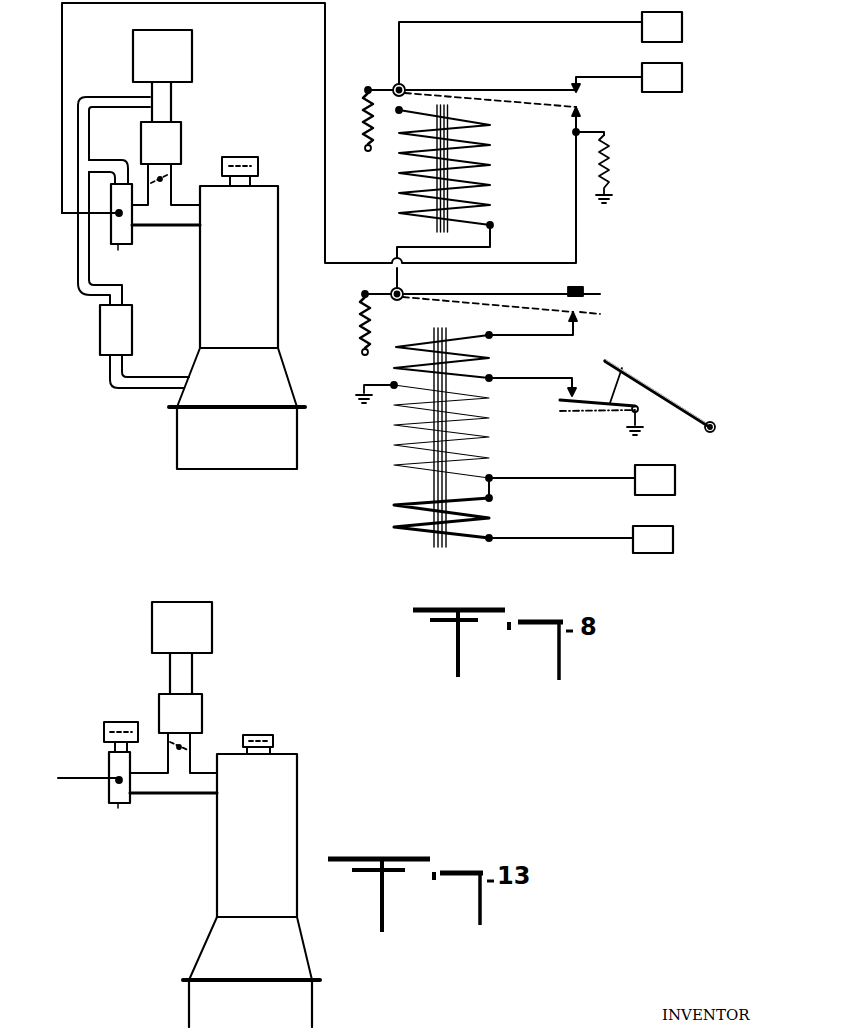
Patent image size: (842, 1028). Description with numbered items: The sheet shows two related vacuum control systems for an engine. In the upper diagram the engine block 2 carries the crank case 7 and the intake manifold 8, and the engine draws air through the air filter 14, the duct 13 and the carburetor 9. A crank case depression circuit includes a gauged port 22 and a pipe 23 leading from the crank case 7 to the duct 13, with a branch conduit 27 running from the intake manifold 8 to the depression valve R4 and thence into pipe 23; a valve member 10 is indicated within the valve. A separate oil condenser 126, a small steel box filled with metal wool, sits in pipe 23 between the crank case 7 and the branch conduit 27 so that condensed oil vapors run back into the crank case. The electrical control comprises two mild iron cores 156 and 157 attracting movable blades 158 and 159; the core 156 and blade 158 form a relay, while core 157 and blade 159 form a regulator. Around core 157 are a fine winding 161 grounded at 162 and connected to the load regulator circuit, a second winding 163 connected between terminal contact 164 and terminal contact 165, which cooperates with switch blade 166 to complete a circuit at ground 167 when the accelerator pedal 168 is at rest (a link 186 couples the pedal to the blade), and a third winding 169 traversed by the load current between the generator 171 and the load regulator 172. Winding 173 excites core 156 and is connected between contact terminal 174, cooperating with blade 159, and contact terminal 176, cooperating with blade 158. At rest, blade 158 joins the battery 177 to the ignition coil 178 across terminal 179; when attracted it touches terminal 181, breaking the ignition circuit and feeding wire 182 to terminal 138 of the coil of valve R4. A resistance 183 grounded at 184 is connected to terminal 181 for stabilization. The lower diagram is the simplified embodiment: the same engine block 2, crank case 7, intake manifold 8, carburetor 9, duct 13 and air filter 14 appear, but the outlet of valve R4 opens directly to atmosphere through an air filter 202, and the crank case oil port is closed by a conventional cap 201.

In FIG. 8, the engine block 2 is at (278, 243).
In FIG. 13, the engine block 2 is at (257, 835).
In FIG. 8, the crank case 7 is at (281, 378).
In FIG. 13, the crank case 7 is at (251, 972).
In FIG. 8, the intake manifold 8 is at (188, 206).
In FIG. 13, the intake manifold 8 is at (210, 784).
In FIG. 8, the carburetor 9 is at (161, 143).
In FIG. 13, the carburetor 9 is at (202, 718).
In FIG. 8, the valve member 10 is at (170, 181).
In FIG. 13, the valve member 10 is at (190, 751).
In FIG. 8, the duct 13 is at (171, 100).
In FIG. 13, the duct 13 is at (191, 677).
In FIG. 8, the air filter 14 is at (162, 56).
In FIG. 13, the air filter 14 is at (208, 631).
In FIG. 8, the gauged port 22 is at (258, 166).
In FIG. 8, the pipe 23 is at (108, 103).
In FIG. 8, the branch conduit 27 is at (125, 170).
In FIG. 8, the oil condenser 126 is at (132, 330).
In FIG. 8, the terminal 138 is at (125, 228).
In FIG. 13, the terminal 138 is at (112, 788).
In FIG. 8, the depression valve R4 is at (123, 256).
In FIG. 13, the depression valve R4 is at (132, 815).
In FIG. 8, the mild iron core 156 is at (449, 112).
In FIG. 8, the mild iron core 157 is at (440, 550).
In FIG. 8, the movable blade 158 is at (552, 93).
In FIG. 8, the movable blade 159 is at (541, 292).
In FIG. 8, the winding 161 is at (492, 440).
In FIG. 8, the ground 162 is at (372, 383).
In FIG. 8, the second winding 163 is at (492, 360).
In FIG. 8, the terminal contact 164 is at (578, 326).
In FIG. 8, the terminal contact 165 is at (560, 402).
In FIG. 8, the switch blade 166 is at (584, 414).
In FIG. 8, the ground 167 is at (642, 430).
In FIG. 8, the accelerator pedal 168 is at (638, 375).
In FIG. 8, the third winding 169 is at (492, 516).
In FIG. 8, the generator 171 is at (673, 542).
In FIG. 8, the load regulator 172 is at (675, 482).
In FIG. 8, the winding 173 is at (492, 184).
In FIG. 8, the contact terminal 174 is at (400, 289).
In FIG. 8, the contact terminal 176 is at (402, 84).
In FIG. 8, the battery 177 is at (682, 30).
In FIG. 8, the ignition coil 178 is at (682, 80).
In FIG. 8, the contact terminal 179 is at (584, 90).
In FIG. 8, the contact terminal 181 is at (580, 120).
In FIG. 8, the wire 182 is at (62, 204).
In FIG. 13, the wire 182 is at (58, 780).
In FIG. 8, the resistance 183 is at (614, 163).
In FIG. 8, the ground 184 is at (612, 200).
In FIG. 8, the link 186 is at (614, 378).
In FIG. 13, the cap 201 is at (268, 738).
In FIG. 13, the air filter 202 is at (112, 724).